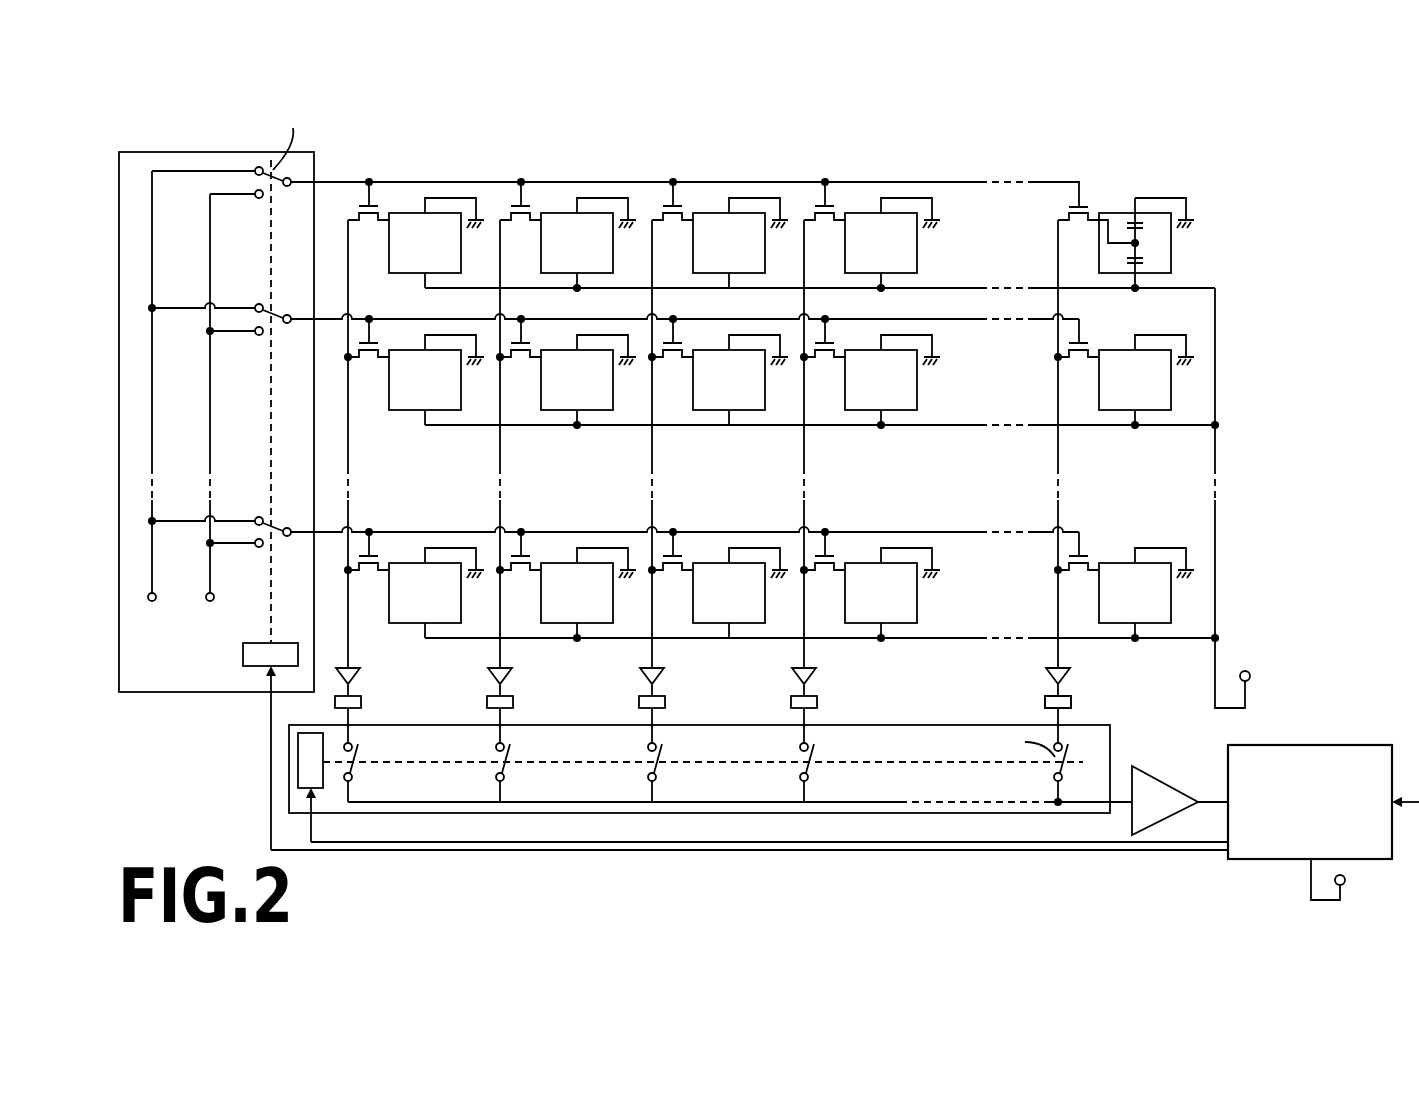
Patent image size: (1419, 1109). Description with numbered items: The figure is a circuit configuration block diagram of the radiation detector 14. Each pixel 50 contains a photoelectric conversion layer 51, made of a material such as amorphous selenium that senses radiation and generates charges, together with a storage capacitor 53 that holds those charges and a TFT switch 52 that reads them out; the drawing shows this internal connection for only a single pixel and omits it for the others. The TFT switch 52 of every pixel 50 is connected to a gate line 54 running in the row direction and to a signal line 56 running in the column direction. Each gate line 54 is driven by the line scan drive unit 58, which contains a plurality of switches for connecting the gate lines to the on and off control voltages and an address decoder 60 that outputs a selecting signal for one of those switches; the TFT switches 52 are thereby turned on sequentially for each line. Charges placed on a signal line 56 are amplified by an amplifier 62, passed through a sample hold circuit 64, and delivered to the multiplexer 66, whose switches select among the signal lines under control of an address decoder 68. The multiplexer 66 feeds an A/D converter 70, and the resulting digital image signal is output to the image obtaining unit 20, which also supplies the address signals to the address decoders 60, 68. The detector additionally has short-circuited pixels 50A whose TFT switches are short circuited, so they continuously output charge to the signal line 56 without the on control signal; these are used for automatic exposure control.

The radiation detector 14 is at (1107, 158).
The image obtaining unit 20 is at (1370, 744).
The pixel 50 is at (567, 212).
The short-circuited pixel 50A is at (702, 212).
The photoelectric conversion layer 51 is at (1145, 260).
The TFT switch 52 is at (1068, 208).
The storage capacitor 53 is at (1145, 225).
The gate line 54 is at (1060, 181).
The signal line 56 is at (1057, 268).
The line scan drive unit 58 is at (173, 693).
The address decoder 60 is at (243, 655).
The amplifier 62 is at (1070, 677).
The sample hold circuit 64 is at (1072, 702).
The multiplexer 66 is at (960, 724).
The address decoder 68 is at (296, 782).
The A/D converter 70 is at (1172, 787).